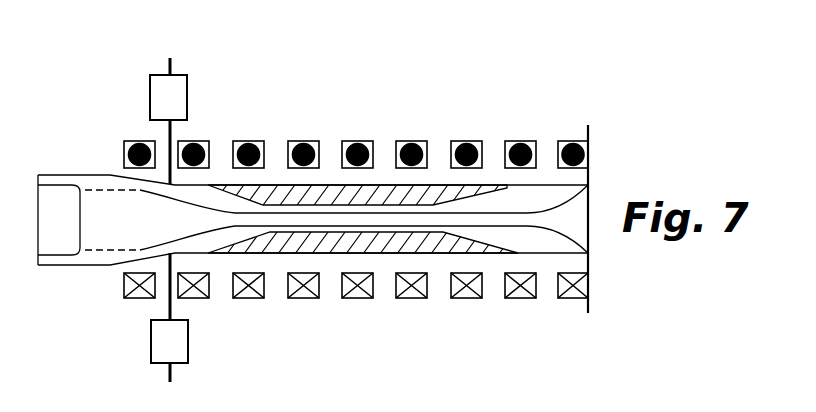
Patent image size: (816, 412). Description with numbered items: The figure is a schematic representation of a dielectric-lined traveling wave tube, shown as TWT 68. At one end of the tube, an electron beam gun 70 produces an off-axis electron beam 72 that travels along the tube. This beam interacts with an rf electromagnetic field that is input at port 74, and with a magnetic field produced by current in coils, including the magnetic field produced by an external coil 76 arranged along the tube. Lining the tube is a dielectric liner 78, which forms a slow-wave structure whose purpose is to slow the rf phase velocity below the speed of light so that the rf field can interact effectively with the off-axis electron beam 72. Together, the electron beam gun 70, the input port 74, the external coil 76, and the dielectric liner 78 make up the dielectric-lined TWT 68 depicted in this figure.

The TWT 68 is at (430, 104).
The electron beam gun 70 is at (68, 250).
The off-axis electron beam 72 is at (283, 225).
The port 74 is at (170, 367).
The external coil 76 is at (206, 133).
The dielectric liner 78 is at (339, 255).